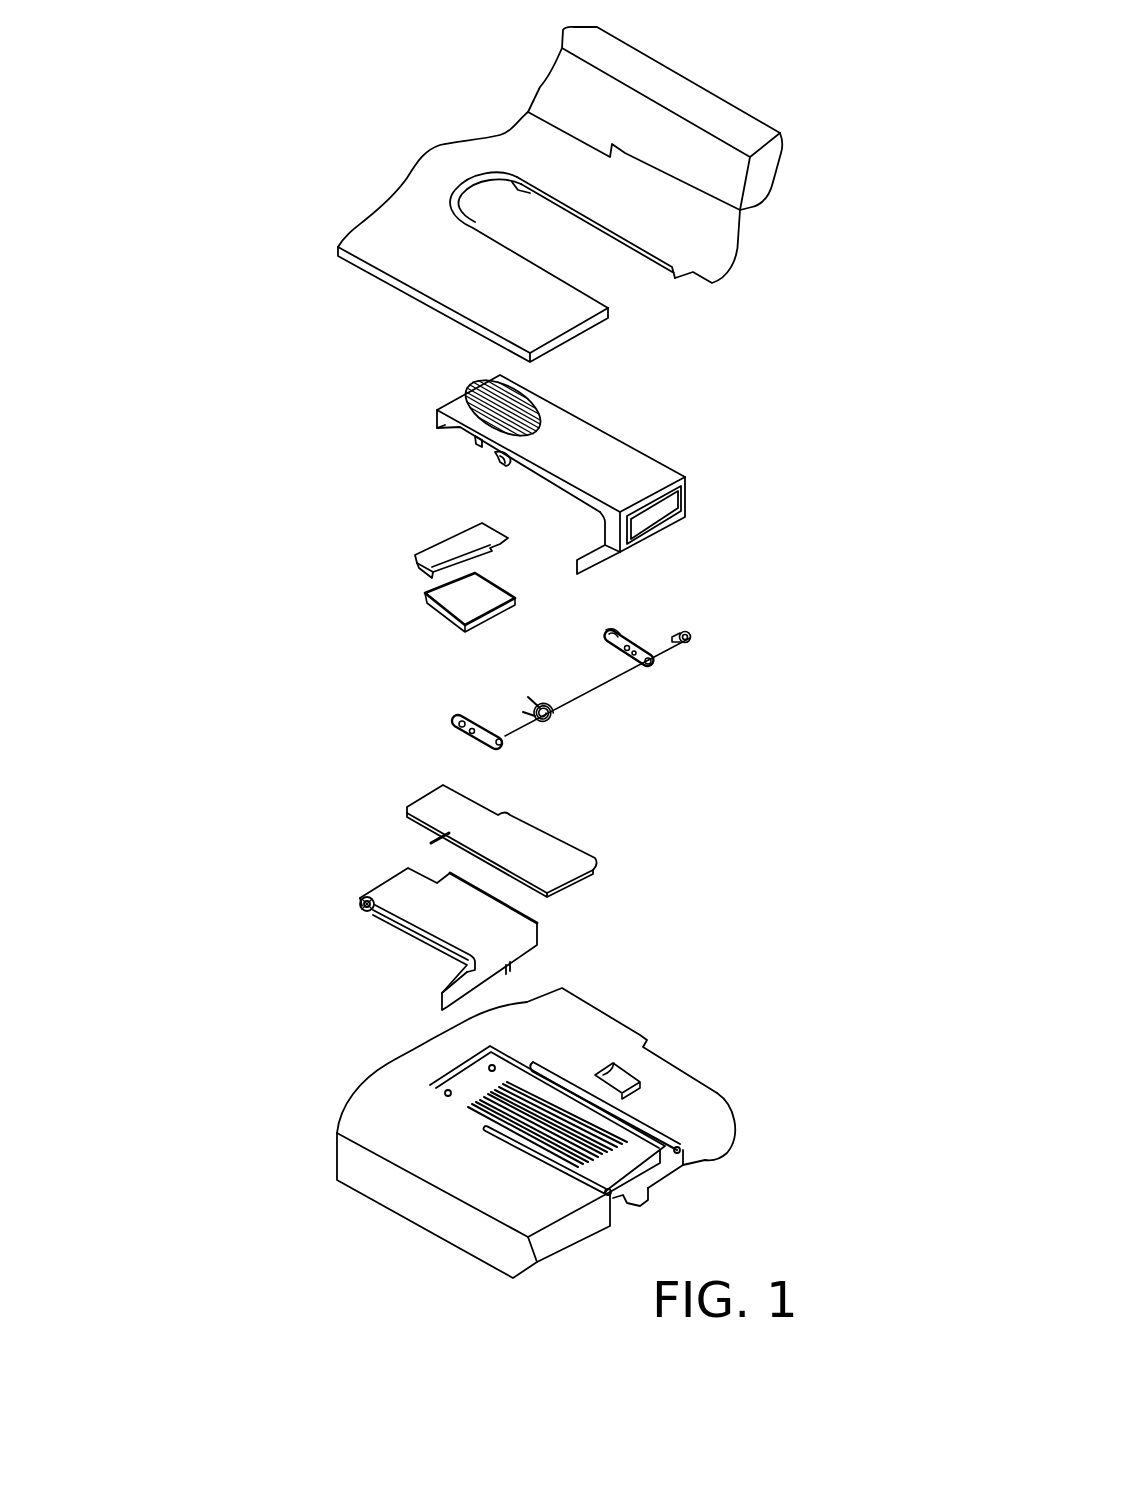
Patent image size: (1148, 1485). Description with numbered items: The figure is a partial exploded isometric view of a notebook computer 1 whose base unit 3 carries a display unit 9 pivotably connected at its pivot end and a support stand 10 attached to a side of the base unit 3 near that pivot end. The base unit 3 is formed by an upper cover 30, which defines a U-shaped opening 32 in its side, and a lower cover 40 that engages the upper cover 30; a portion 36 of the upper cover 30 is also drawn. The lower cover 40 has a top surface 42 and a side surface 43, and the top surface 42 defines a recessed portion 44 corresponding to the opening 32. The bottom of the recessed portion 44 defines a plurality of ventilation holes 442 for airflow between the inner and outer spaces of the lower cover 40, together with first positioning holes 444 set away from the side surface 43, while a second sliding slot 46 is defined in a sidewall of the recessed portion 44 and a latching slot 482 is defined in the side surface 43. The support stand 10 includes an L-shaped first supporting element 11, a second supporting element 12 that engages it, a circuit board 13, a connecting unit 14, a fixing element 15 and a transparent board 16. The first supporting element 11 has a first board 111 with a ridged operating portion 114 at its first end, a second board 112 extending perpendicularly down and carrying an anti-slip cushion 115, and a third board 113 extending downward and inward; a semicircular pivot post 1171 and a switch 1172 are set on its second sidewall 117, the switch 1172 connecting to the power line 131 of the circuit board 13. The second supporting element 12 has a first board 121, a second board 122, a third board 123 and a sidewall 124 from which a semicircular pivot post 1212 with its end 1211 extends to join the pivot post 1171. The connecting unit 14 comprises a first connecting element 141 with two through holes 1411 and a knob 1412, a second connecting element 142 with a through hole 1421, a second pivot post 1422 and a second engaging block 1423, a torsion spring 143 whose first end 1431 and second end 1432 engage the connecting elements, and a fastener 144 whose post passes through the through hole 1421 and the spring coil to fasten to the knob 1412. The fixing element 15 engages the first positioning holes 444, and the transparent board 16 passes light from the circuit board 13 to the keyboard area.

The notebook computer 1 is at (372, 62).
The base unit 3 is at (846, 233).
The display unit 9 is at (653, 123).
The support stand 10 is at (245, 393).
The first supporting element 11 is at (696, 460).
The second supporting element 12 is at (431, 957).
The circuit board 13 is at (440, 808).
The connecting unit 14 is at (781, 656).
The fixing element 15 is at (443, 553).
The transparent board 16 is at (438, 605).
The upper cover 30 is at (688, 222).
The U-shaped opening 32 is at (618, 285).
The bent tab 36 is at (718, 262).
The lower cover 40 is at (356, 1204).
The top surface 42 is at (408, 1132).
The side surface 43 is at (693, 1163).
The recessed portion 44 is at (632, 1150).
The second sliding slot 46 is at (567, 1075).
The first board 111 is at (575, 448).
The second board 112 is at (668, 528).
The third board 113 is at (597, 562).
The ridged operating portion 114 is at (480, 400).
The cushion 115 is at (667, 503).
The second sidewall 117 is at (535, 468).
The first board 121 is at (407, 900).
The second board 122 is at (517, 942).
The third board 123 is at (507, 972).
The sidewall 124 is at (418, 928).
The power line 131 is at (443, 837).
The first connecting element 141 is at (460, 720).
The second connecting element 142 is at (612, 647).
The spring 143 is at (548, 720).
The fastener 144 is at (697, 638).
The ventilation hole 442 is at (622, 1063).
The first positioning hole 444 is at (435, 1085).
The latching slot 482 is at (643, 1183).
The semicircular pivot post 1171 is at (500, 460).
The switch 1172 is at (478, 442).
The pivot end 1211 is at (360, 897).
The semicircular pivot post 1212 is at (365, 908).
The through hole 1411 is at (470, 730).
The knob 1412 is at (505, 740).
The through hole 1421 is at (650, 667).
The second pivot post 1422 is at (620, 630).
The second engaging block 1423 is at (627, 667).
The first end 1431 is at (527, 712).
The second end 1432 is at (533, 697).